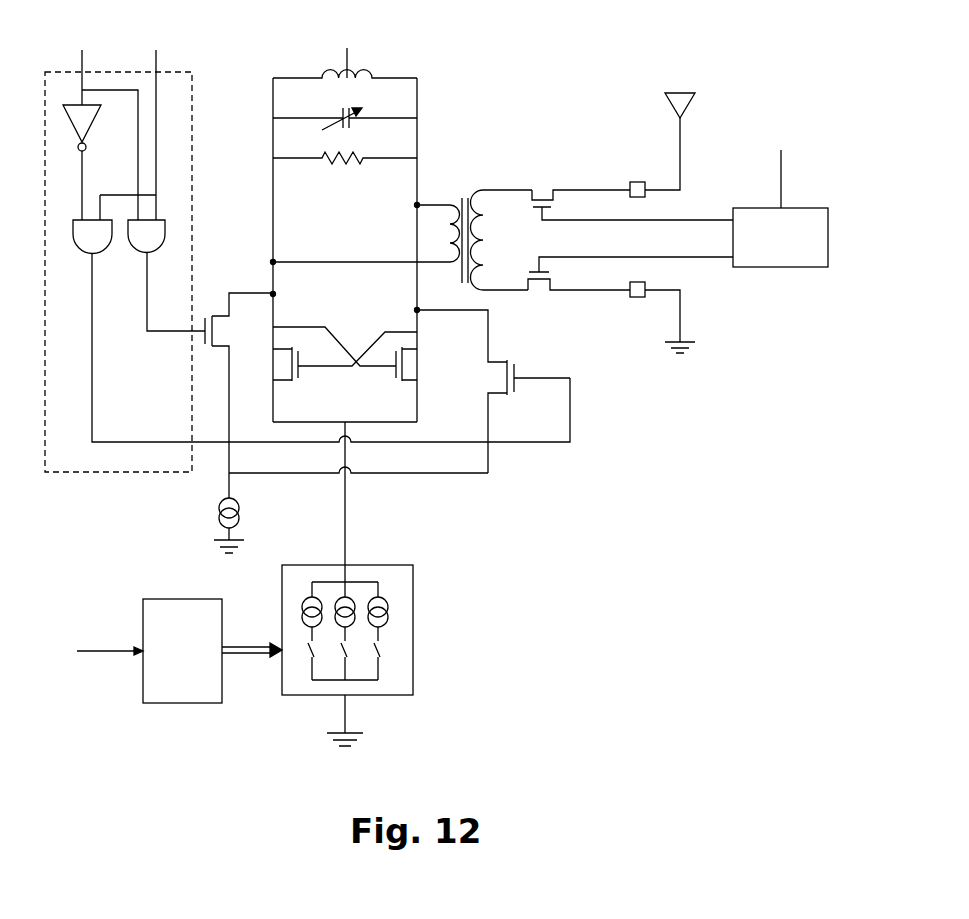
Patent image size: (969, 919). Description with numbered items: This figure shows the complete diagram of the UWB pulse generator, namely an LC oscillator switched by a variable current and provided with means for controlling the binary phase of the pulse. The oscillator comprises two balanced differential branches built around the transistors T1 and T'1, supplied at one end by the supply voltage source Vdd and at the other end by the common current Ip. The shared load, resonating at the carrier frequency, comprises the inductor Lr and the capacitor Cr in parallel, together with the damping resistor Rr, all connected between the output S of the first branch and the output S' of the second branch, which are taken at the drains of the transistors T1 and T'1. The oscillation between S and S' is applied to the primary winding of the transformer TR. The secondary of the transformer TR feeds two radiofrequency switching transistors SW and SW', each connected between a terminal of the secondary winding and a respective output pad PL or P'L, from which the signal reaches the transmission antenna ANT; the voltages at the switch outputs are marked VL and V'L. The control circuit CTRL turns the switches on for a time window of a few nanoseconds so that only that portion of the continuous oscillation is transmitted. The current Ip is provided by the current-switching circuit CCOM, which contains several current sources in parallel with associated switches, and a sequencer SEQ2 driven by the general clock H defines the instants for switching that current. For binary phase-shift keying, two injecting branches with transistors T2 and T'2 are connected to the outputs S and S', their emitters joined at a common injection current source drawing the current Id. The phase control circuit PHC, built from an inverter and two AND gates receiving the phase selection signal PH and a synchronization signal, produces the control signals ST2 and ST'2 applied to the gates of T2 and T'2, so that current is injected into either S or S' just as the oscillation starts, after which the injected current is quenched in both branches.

The phase control circuit PHC is at (120, 472).
The logic signal for selecting the phase PH is at (91, 127).
The control signal for turning on transistor T2 ST2 is at (174, 304).
The control signal for turning on transistor T'2 ST'2 is at (331, 347).
The transistor of first injecting branch T2 is at (240, 395).
The transistor of first differential branch T1 is at (335, 356).
The transistor of second differential branch T'1 is at (352, 354).
The transistor of second injecting branch T'2 is at (493, 391).
The injection current Id is at (207, 488).
The common current Ip is at (357, 498).
The output of the first branch S is at (264, 250).
The output of the second branch S' is at (404, 206).
The supply voltage source Vdd is at (351, 54).
The inductor Lr is at (345, 89).
The capacitor Cr is at (345, 128).
The damping resistor Rr is at (345, 170).
The transformer TR is at (402, 230).
The radiofrequency switching transistor SW is at (632, 191).
The radiofrequency switching transistor SW' is at (629, 290).
The load voltage VL is at (557, 238).
The load voltage V'L is at (601, 238).
The output pad PL is at (644, 157).
The output pad P'L is at (651, 317).
The transmission antenna ANT is at (654, 105).
The control circuit CTRL is at (780, 237).
The general clock H is at (429, 412).
The current-switching circuit CCOM is at (413, 606).
The sequencer SEQ2 is at (212, 651).